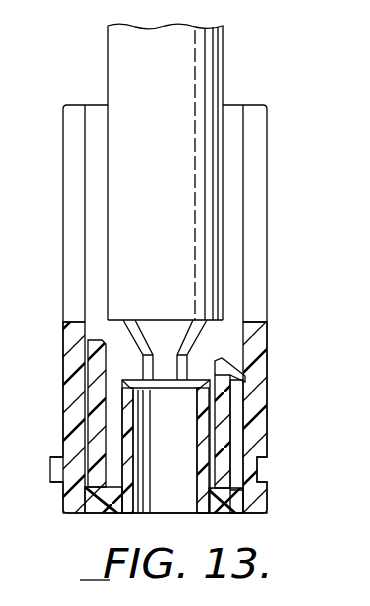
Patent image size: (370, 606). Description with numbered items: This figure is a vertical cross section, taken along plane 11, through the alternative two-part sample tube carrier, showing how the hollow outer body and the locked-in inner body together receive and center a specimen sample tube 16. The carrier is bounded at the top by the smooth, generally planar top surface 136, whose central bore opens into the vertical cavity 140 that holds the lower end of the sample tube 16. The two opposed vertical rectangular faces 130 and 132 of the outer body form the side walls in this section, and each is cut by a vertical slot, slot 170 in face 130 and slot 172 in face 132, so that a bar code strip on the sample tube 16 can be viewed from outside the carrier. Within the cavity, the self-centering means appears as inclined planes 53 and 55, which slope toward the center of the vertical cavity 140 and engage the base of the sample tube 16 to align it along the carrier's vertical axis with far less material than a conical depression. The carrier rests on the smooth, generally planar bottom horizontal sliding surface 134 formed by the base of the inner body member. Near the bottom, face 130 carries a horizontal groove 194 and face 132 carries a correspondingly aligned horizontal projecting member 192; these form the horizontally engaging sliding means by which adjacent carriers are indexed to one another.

The sample tube 16 is at (222, 67).
The top surface 136 is at (250, 107).
The vertical cavity 140 is at (80, 146).
The vertical slot 172 is at (72, 322).
The vertical slot 170 is at (255, 318).
The plane 11- 11 is at (37, 357).
The inclined plane 53 is at (132, 327).
The inclined plane 55 is at (192, 333).
The vertical rectangular face 132 is at (66, 388).
The vertical rectangular face 130 is at (268, 415).
The horizontal projecting member 192 is at (50, 463).
The horizontal groove 194 is at (258, 478).
The bottom horizontal sliding surface 134 is at (220, 515).